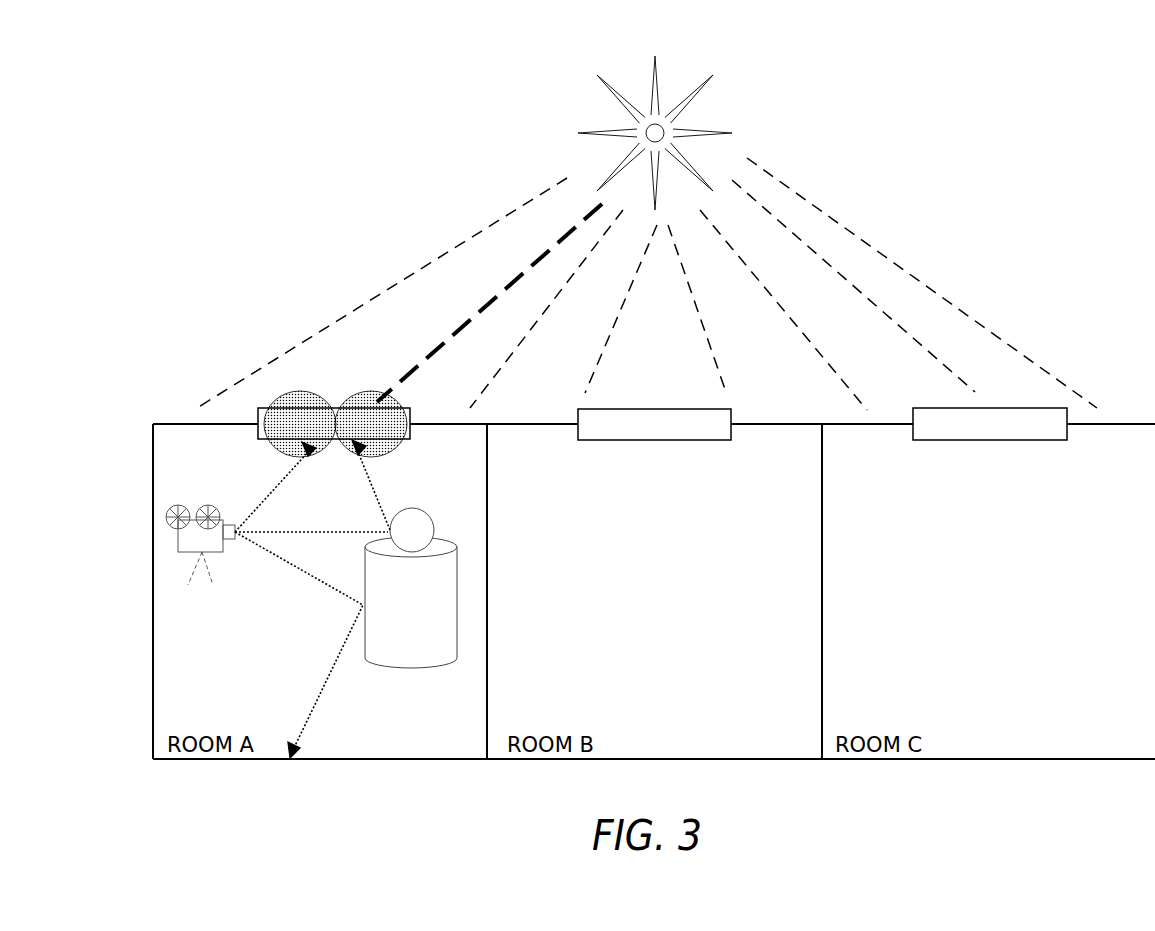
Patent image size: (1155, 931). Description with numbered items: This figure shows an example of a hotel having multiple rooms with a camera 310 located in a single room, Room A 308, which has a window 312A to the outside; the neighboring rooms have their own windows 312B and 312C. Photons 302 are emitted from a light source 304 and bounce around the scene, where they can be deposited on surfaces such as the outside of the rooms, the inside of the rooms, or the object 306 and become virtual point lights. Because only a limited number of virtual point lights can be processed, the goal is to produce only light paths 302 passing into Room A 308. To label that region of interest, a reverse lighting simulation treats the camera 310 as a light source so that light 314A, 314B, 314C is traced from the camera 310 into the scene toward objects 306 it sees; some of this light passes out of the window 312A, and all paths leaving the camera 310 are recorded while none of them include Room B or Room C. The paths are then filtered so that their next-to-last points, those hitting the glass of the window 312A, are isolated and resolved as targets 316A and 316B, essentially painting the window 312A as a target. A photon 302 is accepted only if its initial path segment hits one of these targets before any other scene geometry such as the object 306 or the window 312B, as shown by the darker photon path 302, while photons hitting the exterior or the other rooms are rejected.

The photons 302 is at (884, 225).
The light source 304 is at (685, 73).
The object 306 is at (383, 667).
The room A 308 is at (227, 760).
The camera 310 is at (178, 551).
The window 312A is at (387, 440).
The window 312B is at (698, 440).
The window 312C is at (1027, 440).
The light 314A is at (273, 503).
The light 314B is at (353, 500).
The light 314C is at (287, 563).
The target 316A is at (272, 393).
The target 316B is at (343, 400).